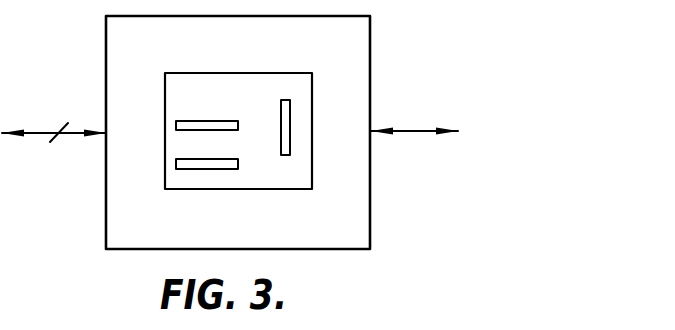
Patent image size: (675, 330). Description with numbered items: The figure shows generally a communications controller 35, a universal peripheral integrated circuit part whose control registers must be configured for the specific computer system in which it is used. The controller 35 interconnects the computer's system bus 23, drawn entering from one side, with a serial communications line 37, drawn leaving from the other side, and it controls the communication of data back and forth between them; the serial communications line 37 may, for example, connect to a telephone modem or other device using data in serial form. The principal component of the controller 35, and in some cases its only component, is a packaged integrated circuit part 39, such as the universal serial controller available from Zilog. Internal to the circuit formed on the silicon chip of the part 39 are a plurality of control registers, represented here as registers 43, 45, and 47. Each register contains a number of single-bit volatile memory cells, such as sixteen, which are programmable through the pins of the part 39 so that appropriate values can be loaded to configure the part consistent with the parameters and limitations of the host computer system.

The system bus 23 is at (43, 130).
The communications controller 35 is at (343, 250).
The serial communications line 37 is at (407, 131).
The packaged integrated circuit part 39 is at (260, 178).
The control register 43 is at (197, 168).
The control register 45 is at (208, 126).
The control register 47 is at (292, 120).